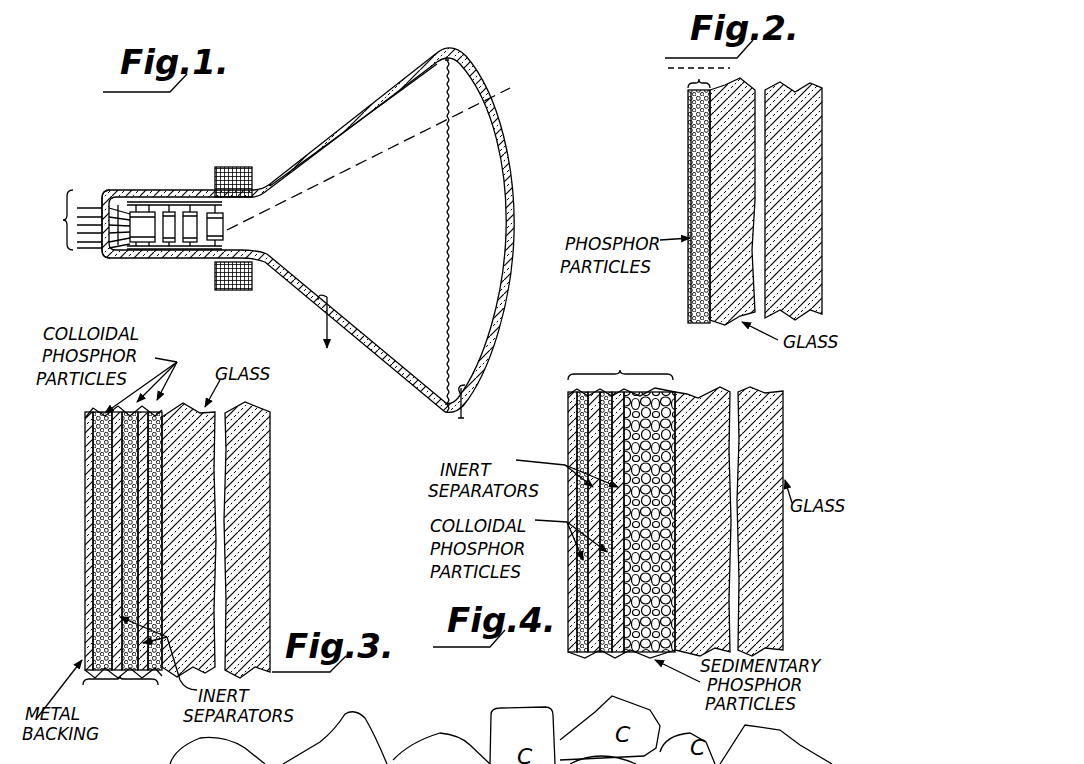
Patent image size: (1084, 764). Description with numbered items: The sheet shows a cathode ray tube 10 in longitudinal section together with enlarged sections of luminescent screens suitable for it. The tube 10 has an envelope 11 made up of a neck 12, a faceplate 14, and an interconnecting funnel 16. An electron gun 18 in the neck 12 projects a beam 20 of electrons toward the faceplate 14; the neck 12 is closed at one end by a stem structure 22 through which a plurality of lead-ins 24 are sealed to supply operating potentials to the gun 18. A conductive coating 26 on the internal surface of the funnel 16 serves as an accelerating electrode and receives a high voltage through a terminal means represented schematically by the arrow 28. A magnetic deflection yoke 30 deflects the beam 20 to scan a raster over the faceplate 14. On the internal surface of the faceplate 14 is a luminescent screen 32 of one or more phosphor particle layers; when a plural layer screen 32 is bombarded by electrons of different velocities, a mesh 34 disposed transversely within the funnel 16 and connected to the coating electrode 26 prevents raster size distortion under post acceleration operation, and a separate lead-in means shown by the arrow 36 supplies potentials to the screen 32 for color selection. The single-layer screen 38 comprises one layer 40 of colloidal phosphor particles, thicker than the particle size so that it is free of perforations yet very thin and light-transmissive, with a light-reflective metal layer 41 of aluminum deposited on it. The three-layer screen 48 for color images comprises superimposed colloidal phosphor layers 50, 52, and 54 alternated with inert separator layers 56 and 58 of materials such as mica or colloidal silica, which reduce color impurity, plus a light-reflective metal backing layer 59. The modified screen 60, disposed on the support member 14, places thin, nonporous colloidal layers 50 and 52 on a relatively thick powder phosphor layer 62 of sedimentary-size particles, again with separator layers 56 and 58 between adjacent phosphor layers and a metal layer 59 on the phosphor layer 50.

In FIG. 1, the cathode ray tube 10 is at (357, 108).
In FIG. 1, the envelope 11 is at (412, 66).
In FIG. 1, the neck 12 is at (163, 194).
In FIG. 1, the faceplate 14 is at (490, 103).
In FIG. 2, the faceplate 14 is at (822, 178).
In FIG. 3, the faceplate 14 is at (270, 528).
In FIG. 4, the faceplate 14 is at (783, 431).
In FIG. 1, the funnel 16 is at (327, 138).
In FIG. 1, the electron gun 18 is at (160, 233).
In FIG. 1, the electron beam 20 is at (372, 156).
In FIG. 1, the stem structure 22 is at (108, 256).
In FIG. 1, the lead-ins 24 is at (70, 220).
In FIG. 1, the conductive coating 26 is at (399, 361).
In FIG. 1, the terminal means 28 is at (325, 333).
In FIG. 1, the magnetic deflection yoke 30 is at (235, 164).
In FIG. 1, the luminescent screen 32 is at (496, 172).
In FIG. 1, the mesh 34 is at (447, 243).
In FIG. 1, the lead-in means 36 is at (465, 409).
In FIG. 2, the luminescent screen 38 is at (699, 73).
In FIG. 2, the phosphor layer 40 is at (707, 118).
In FIG. 2, the light-reflective metal layer 41 is at (687, 200).
In FIG. 3, the 3-layer luminescent screen 48 is at (122, 559).
In FIG. 3, the colloidal phosphor layer 50 is at (105, 437).
In FIG. 4, the colloidal phosphor layer 50 is at (568, 435).
In FIG. 3, the colloidal phosphor layer 52 is at (128, 483).
In FIG. 4, the colloidal phosphor layer 52 is at (583, 580).
In FIG. 3, the colloidal phosphor layer 54 is at (150, 508).
In FIG. 3, the inert separator layer 56 is at (110, 544).
In FIG. 4, the inert separator layer 56 is at (592, 648).
In FIG. 3, the inert separator layer 58 is at (130, 576).
In FIG. 4, the inert separator layer 58 is at (624, 650).
In FIG. 3, the light-reflective metal backing layer 59 is at (87, 612).
In FIG. 4, the light-reflective metal backing layer 59 is at (565, 642).
In FIG. 4, the luminescent screen 60 is at (621, 503).
In FIG. 4, the powder phosphor layer 62 is at (680, 392).